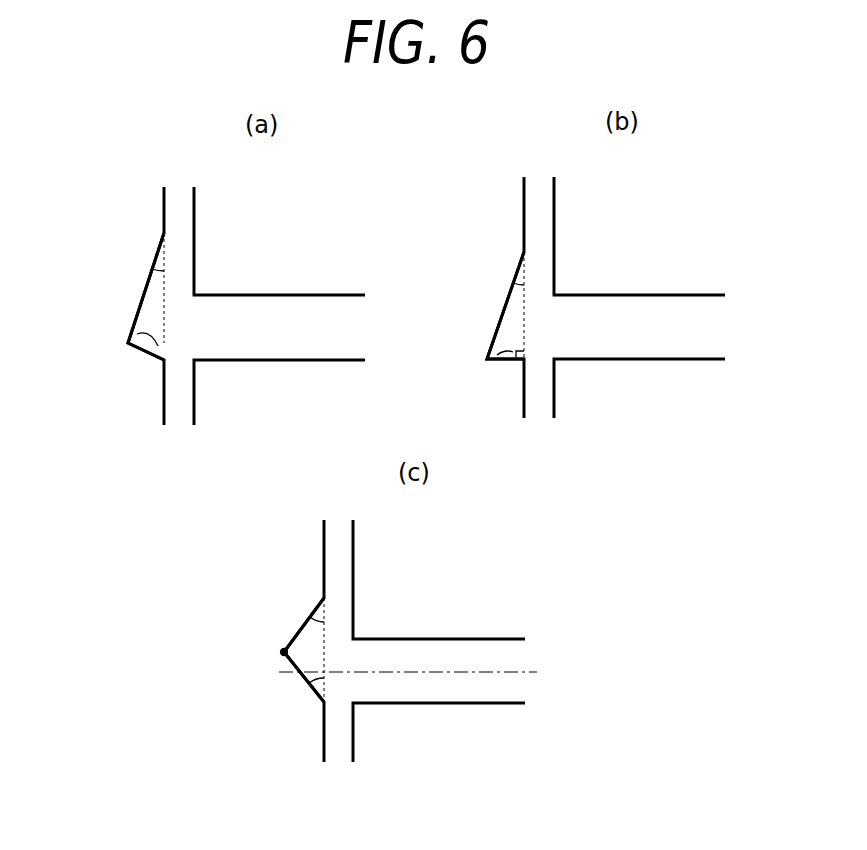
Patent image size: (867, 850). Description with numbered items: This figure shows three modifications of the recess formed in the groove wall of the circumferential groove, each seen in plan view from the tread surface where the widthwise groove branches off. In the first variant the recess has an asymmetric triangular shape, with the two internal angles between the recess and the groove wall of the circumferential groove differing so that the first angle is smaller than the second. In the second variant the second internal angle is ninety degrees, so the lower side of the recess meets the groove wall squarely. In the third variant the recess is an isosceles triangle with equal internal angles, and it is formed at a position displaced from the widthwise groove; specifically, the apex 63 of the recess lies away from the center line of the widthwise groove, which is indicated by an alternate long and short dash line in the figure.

The apex 63 is at (284, 652).